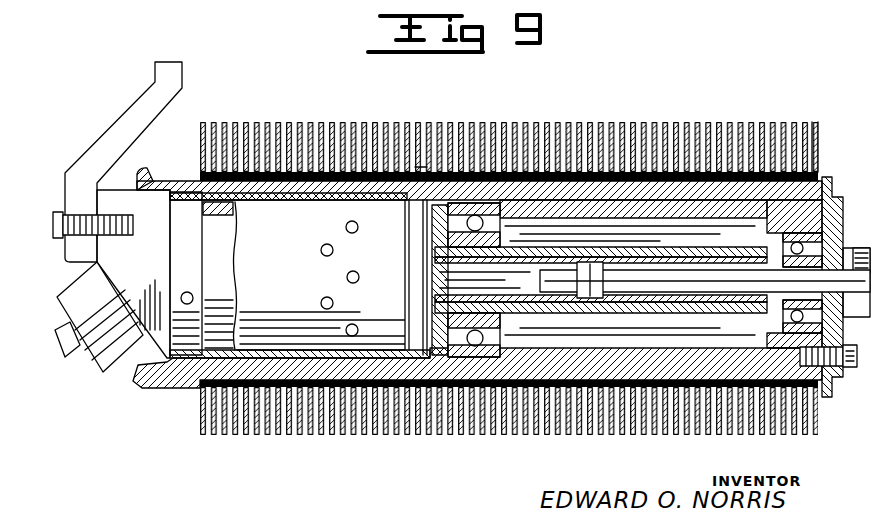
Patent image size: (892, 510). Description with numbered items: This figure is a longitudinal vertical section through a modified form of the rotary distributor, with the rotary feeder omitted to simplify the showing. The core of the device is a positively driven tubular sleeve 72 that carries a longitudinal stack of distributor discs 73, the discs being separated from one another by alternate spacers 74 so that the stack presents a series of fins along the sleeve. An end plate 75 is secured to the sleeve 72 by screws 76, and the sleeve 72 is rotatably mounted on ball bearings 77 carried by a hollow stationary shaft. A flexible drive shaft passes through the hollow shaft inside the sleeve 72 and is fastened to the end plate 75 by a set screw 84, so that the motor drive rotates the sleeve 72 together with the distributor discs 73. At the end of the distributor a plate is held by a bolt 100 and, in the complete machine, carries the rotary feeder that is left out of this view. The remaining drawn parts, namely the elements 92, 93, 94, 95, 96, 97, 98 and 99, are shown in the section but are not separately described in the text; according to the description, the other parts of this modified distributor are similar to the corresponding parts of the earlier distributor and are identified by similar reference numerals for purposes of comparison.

The tubular sleeve 72 is at (595, 353).
The distributor discs 73 is at (638, 125).
The spacers 74 is at (836, 141).
The end plate 75 is at (832, 188).
The screws 76 is at (853, 367).
The ball bearings 77 is at (502, 329).
The set screw 84 is at (857, 248).
The piston 92 is at (315, 277).
The piston rod / shaft 93 is at (633, 278).
The pivot pin 94 is at (64, 371).
The latch block 95 is at (100, 372).
The port 96 is at (421, 167).
The cylinder liner 97 is at (285, 200).
The closure block 98 is at (165, 228).
The handle 99 is at (185, 80).
The bolt 100 is at (95, 240).